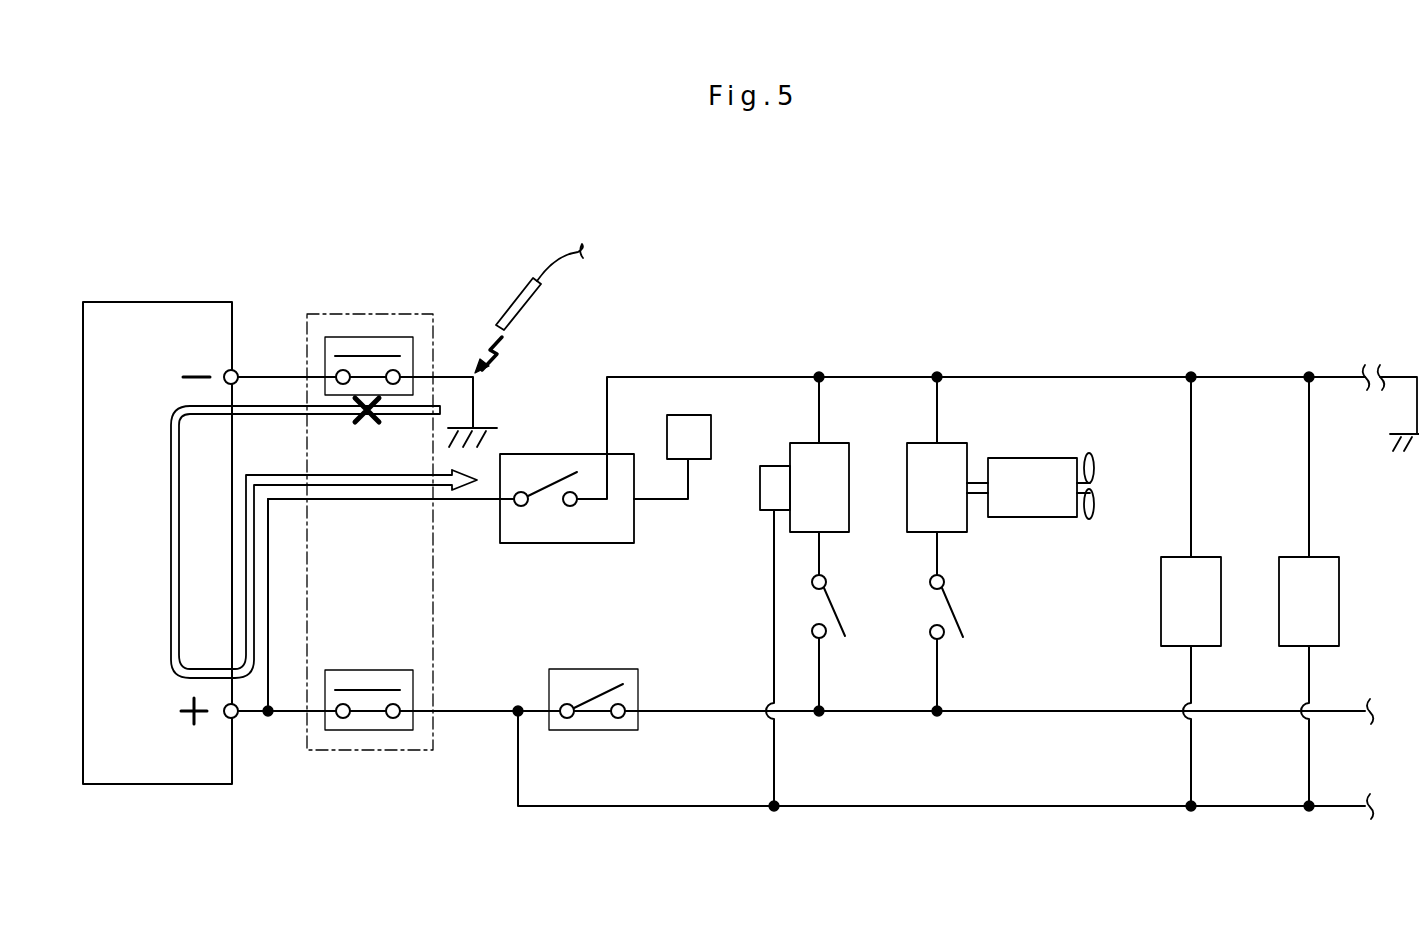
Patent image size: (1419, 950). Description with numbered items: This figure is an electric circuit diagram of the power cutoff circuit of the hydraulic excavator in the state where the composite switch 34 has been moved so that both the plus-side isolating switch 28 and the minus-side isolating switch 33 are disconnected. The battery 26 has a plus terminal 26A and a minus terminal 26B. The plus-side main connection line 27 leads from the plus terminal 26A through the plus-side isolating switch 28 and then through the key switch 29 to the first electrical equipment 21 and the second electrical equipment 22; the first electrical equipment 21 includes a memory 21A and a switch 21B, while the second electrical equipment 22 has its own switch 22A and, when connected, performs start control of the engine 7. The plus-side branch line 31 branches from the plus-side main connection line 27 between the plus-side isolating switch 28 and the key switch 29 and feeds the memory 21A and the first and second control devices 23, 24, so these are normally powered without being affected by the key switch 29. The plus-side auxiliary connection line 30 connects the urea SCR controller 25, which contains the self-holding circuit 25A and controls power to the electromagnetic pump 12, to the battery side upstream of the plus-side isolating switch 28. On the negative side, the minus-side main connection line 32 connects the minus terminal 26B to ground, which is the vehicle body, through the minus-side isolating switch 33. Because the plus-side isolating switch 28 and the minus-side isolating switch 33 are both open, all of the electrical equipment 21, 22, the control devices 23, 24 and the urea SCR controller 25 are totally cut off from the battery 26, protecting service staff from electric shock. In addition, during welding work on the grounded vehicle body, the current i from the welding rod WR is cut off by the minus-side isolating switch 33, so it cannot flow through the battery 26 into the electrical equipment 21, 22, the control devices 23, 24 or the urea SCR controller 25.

The battery 26 is at (150, 302).
The plus terminal 26A is at (238, 718).
The minus terminal 26B is at (238, 372).
The composite switch 34 is at (330, 314).
The minus-side isolating switch 33 is at (370, 337).
The plus-side isolating switch 28 is at (370, 670).
The minus-side main connection line 32 is at (455, 377).
The plus-side auxiliary connection line 30 is at (372, 500).
The plus-side main connection line 27 is at (472, 713).
The urea SCR controller 25 is at (525, 543).
The self-holding circuit 25A is at (548, 486).
The electromagnetic pump 12 is at (687, 415).
The first electrical equipment 21 is at (830, 443).
The memory 21A is at (773, 466).
The switch 21B is at (835, 612).
The second electrical equipment 22 is at (950, 443).
The switch 22A is at (950, 610).
The engine 7 is at (1040, 458).
The first control device 23 is at (1161, 606).
The second control device 24 is at (1339, 606).
The key switch 29 is at (590, 669).
The plus-side branch line 31 is at (662, 806).
The welding rod WR is at (513, 298).
The current i is at (171, 475).